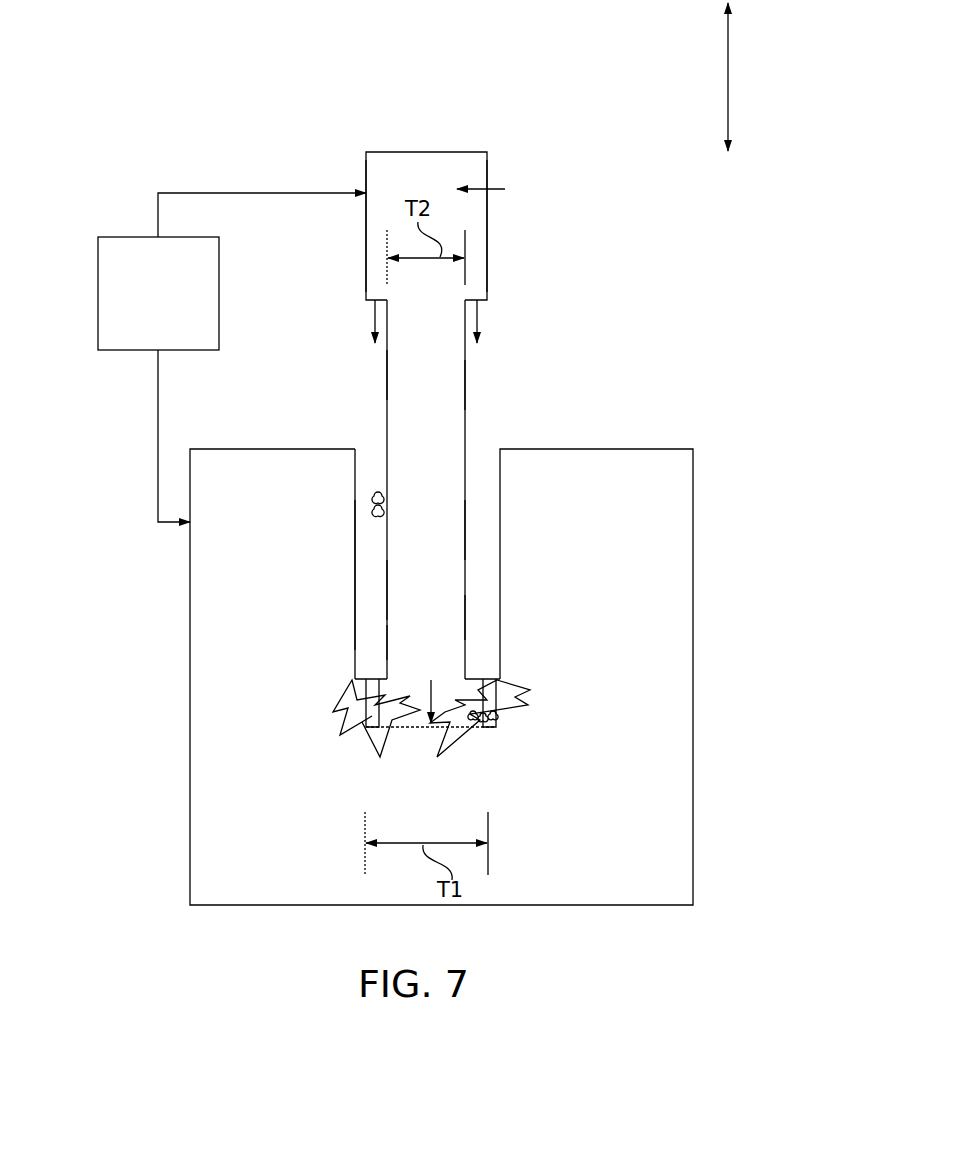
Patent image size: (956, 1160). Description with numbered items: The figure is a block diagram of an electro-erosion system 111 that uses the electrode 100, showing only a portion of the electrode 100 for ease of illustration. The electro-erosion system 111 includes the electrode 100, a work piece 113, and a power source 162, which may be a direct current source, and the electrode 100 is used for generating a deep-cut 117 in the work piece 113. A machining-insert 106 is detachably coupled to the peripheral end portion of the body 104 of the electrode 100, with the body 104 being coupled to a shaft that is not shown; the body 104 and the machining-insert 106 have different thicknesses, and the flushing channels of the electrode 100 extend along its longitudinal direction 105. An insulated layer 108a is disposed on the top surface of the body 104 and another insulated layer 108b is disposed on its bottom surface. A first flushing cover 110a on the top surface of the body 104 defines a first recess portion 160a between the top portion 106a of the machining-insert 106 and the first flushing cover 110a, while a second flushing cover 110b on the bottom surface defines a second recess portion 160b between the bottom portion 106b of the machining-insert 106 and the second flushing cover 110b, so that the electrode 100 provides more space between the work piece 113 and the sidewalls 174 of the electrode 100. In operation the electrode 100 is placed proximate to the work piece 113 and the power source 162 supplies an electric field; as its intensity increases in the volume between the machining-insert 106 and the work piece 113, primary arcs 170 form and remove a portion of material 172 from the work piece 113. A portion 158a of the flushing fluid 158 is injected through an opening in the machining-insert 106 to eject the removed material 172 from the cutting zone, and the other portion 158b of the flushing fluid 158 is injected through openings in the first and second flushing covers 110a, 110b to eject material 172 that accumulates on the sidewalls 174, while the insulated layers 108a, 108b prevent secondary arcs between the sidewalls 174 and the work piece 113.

The electrode 100 is at (488, 228).
The body 104 is at (457, 453).
The longitudinal direction 105 is at (728, 85).
The machining-insert 106 is at (360, 728).
The top portion of the machining-insert 106a is at (356, 668).
The bottom portion of the machining-insert 106b is at (490, 663).
The insulated layer 108a is at (387, 368).
The insulated layer 108b is at (467, 390).
The first flushing cover 110a is at (373, 178).
The second flushing cover 110b is at (475, 277).
The electro-erosion system 111 is at (157, 78).
The work piece 113 is at (673, 512).
The deep-cut 117 is at (373, 568).
The flushing fluid 158 is at (499, 189).
The portion of the flushing fluid 158a is at (433, 679).
The other portion of the flushing fluid 158b is at (377, 312).
The first recess portion 160a is at (382, 585).
The second recess portion 160b is at (473, 543).
The power source 162 is at (232, 357).
The primary arcs 170 is at (397, 738).
The material 172 is at (385, 502).
The sidewalls 174 is at (387, 625).